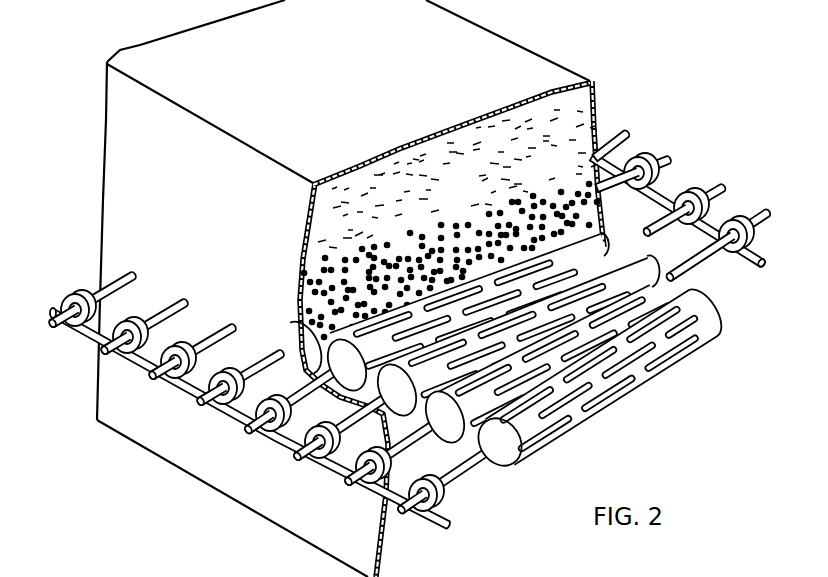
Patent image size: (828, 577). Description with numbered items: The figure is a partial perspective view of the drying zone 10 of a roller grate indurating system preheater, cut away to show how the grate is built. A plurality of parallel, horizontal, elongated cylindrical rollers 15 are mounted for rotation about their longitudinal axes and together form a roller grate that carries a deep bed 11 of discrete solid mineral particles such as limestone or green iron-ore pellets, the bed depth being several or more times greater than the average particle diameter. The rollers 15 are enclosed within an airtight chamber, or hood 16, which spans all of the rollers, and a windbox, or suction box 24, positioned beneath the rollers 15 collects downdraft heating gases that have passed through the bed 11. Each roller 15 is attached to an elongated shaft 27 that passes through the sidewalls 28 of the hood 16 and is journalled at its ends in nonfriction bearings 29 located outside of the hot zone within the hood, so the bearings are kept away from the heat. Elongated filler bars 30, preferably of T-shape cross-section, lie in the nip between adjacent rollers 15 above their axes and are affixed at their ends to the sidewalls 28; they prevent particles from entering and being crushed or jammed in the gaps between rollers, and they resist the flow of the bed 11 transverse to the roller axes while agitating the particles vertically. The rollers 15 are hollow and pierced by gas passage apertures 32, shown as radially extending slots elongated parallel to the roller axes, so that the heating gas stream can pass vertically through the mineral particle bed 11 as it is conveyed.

The drying zone 10 is at (608, 46).
The bed 11 is at (540, 180).
The rollers 15 is at (531, 456).
The hood 16 is at (404, 152).
The suction box 24 is at (238, 494).
The shafts 27 is at (717, 188).
The sidewalls 28 is at (117, 164).
The bearings 29 is at (648, 200).
The filler bars 30 is at (622, 254).
The gas passage apertures 32 is at (645, 380).